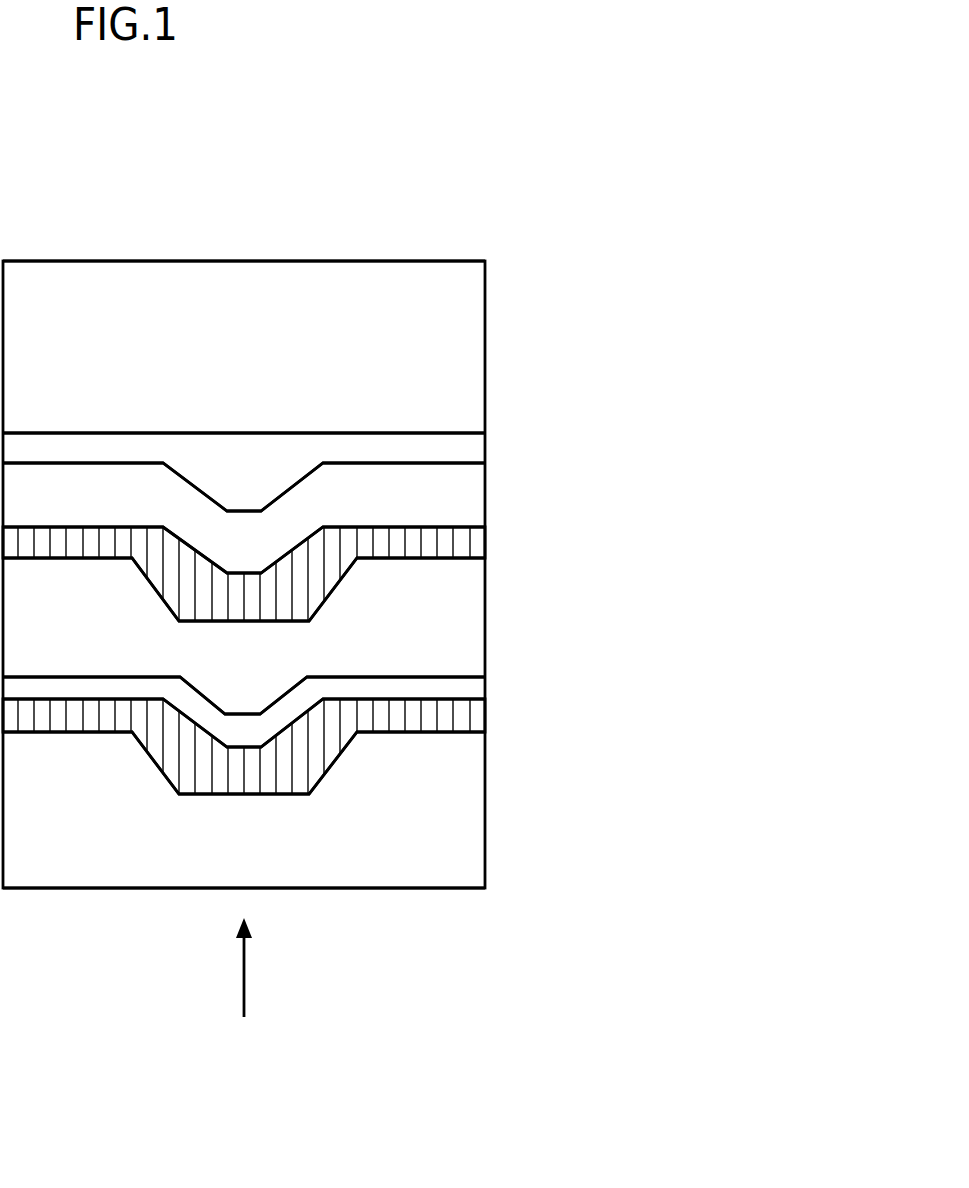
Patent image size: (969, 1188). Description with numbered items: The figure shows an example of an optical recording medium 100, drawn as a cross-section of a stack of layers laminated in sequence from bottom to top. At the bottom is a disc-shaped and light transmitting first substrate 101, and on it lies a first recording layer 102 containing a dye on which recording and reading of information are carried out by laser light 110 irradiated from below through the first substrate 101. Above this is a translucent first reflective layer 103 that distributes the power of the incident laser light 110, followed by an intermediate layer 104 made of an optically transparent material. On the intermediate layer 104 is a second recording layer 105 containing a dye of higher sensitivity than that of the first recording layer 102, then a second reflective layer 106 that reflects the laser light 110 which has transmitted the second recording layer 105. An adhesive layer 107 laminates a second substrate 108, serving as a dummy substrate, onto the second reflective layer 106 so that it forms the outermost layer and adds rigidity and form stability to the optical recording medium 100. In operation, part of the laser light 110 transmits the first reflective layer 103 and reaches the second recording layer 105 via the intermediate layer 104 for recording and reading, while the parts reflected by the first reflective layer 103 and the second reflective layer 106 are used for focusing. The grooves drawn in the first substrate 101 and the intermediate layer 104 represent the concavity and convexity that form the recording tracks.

The optical recording medium 100 is at (269, 195).
The first substrate 101 is at (470, 811).
The first recording layer 102 is at (470, 716).
The first reflective layer 103 is at (470, 688).
The intermediate layer 104 is at (470, 631).
The second recording layer 105 is at (470, 544).
The second reflective layer 106 is at (470, 496).
The adhesive layer 107 is at (470, 449).
The second substrate 108 is at (470, 355).
The laser light 110 is at (312, 985).